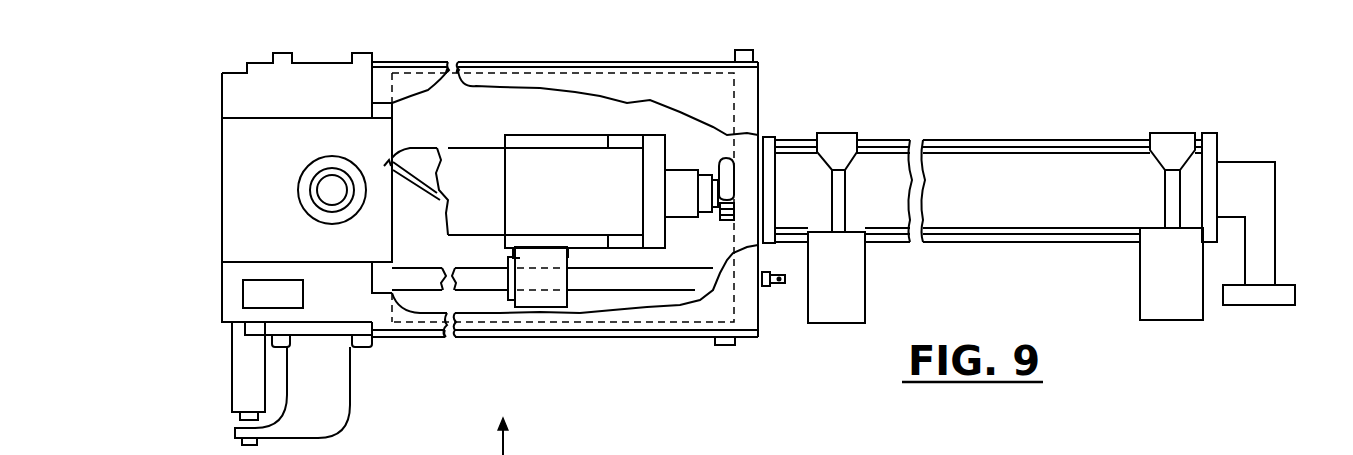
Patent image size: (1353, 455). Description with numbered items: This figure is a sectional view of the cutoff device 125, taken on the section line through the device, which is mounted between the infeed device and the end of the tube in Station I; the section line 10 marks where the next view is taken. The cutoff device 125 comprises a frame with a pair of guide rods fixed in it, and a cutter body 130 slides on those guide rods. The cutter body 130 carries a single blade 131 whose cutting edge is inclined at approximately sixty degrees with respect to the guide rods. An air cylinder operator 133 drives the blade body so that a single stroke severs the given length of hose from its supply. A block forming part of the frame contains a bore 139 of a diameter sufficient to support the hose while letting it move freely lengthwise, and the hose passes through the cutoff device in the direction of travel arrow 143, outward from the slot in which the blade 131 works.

The section line 10 is at (178, 28).
The cutoff device 125 is at (575, 337).
The cutter body 130 is at (602, 196).
The blade 131 is at (416, 158).
The air cylinder operator 133 is at (1020, 170).
The bore 139 is at (318, 180).
The direction of travel arrow 143 is at (502, 449).